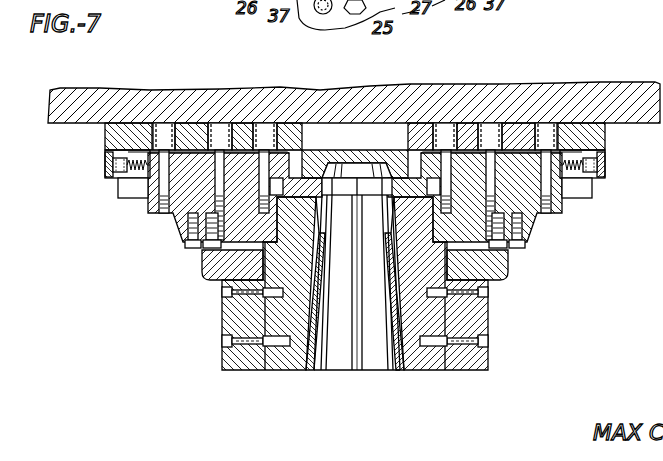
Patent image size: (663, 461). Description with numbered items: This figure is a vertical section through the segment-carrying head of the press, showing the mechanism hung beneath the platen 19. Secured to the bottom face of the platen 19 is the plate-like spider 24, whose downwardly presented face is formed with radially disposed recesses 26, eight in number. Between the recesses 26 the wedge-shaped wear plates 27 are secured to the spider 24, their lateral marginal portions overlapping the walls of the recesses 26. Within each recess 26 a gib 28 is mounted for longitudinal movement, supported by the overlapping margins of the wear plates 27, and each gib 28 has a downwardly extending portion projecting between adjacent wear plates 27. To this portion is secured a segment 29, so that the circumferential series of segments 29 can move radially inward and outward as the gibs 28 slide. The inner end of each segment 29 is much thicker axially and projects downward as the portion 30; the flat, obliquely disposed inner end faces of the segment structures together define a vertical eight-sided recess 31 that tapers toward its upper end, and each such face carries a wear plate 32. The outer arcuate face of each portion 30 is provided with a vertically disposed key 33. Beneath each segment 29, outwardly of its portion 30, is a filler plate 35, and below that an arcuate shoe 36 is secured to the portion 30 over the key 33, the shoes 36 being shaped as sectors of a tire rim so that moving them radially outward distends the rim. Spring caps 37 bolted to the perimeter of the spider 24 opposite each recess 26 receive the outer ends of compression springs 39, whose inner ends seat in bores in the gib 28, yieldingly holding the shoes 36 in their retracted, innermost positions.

The platen 19 is at (610, 95).
The plate-like spider 24 is at (107, 138).
The radially disposed recesses 26 is at (185, 135).
The wear plates 27 is at (301, 150).
The gib 28 is at (240, 160).
The segment 29 is at (177, 215).
The downwardly projecting thickened portion 30 is at (282, 371).
The eight-sided recess 31 is at (361, 380).
The wear plate 32 is at (310, 371).
The keys 33 is at (263, 371).
The filler plate 35 is at (183, 245).
The arcuate shoe 36 is at (222, 343).
The spring caps 37 is at (108, 177).
The compression springs 39 is at (137, 183).